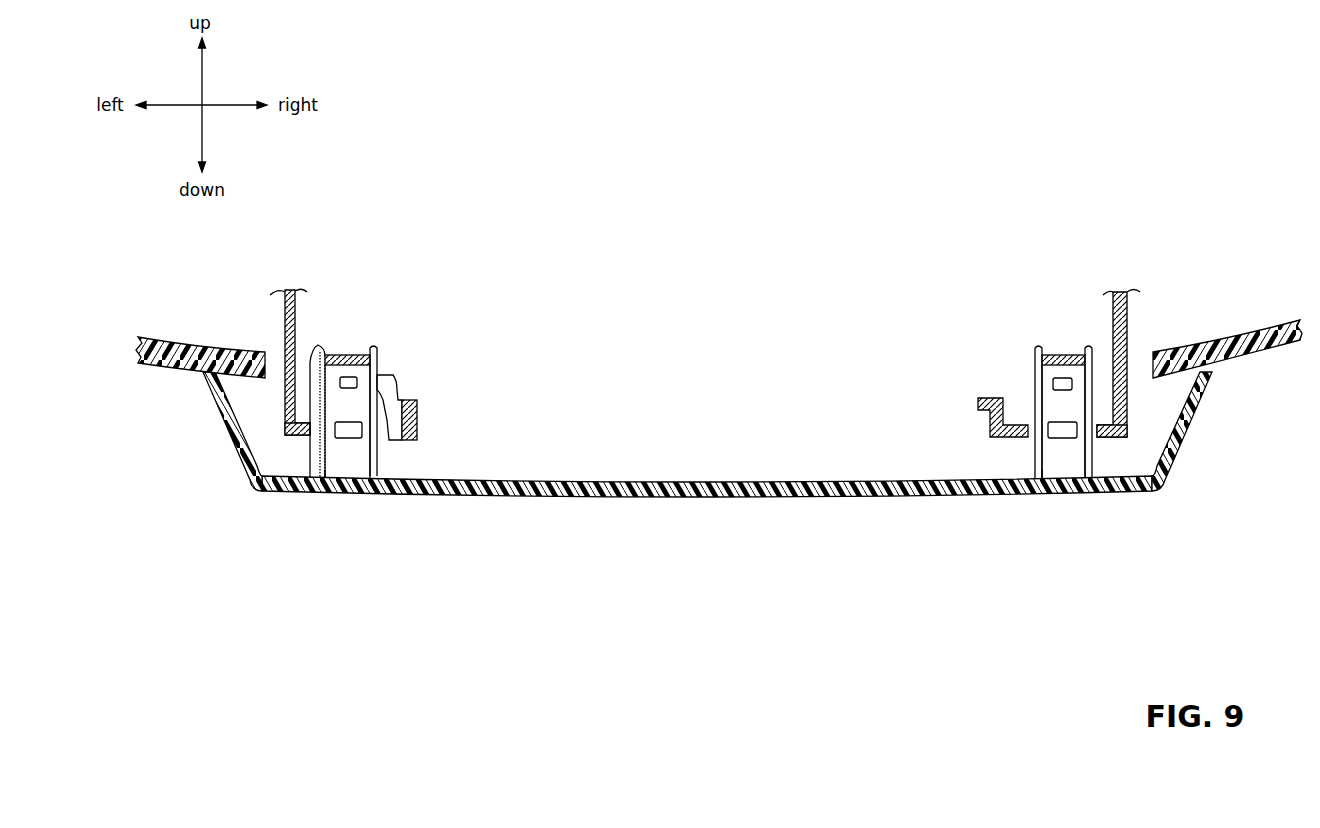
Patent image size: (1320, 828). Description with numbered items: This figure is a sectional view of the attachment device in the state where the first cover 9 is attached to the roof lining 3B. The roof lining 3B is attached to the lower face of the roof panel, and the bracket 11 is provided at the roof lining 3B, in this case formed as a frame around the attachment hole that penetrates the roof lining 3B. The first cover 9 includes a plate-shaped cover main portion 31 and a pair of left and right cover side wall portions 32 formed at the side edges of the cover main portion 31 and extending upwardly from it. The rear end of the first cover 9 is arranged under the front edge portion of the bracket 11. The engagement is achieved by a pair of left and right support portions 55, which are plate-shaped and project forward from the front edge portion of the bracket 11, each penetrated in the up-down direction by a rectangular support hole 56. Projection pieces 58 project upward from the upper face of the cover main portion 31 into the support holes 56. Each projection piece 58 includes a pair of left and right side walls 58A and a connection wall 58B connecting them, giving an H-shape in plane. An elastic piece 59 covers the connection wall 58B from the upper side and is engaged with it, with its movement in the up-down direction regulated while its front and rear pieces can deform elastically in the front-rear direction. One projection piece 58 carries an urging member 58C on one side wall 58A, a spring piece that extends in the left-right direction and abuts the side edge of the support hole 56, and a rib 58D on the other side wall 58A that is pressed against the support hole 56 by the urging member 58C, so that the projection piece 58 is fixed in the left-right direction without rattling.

The roof lining 3B is at (178, 342).
The first cover 9 is at (692, 463).
The bracket 11 is at (283, 287).
The cover main portion 31 is at (791, 479).
The cover side wall portion 32 is at (216, 421).
The support portion 55 is at (288, 442).
The support hole 56 is at (332, 440).
The projection piece 58 is at (694, 413).
The side wall 58A is at (314, 460).
The connection wall 58B is at (363, 465).
The urging member 58C is at (400, 392).
The rib 58D is at (311, 372).
The elastic piece 59 is at (341, 350).